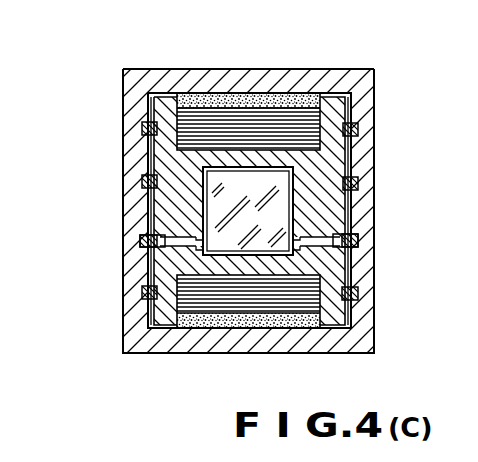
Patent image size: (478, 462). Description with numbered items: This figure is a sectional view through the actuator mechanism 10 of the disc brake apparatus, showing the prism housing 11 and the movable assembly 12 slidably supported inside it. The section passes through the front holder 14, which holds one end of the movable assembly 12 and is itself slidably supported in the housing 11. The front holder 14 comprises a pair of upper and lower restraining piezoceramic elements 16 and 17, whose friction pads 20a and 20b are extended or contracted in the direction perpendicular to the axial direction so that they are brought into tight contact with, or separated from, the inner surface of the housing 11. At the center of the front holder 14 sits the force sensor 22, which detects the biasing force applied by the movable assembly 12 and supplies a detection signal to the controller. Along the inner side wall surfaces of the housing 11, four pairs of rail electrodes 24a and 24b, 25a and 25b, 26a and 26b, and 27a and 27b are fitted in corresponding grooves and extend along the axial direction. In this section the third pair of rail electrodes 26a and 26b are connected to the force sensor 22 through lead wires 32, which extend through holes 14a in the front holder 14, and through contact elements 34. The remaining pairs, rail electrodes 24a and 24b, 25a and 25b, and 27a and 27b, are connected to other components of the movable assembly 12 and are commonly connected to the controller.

The actuator device 10 is at (333, 66).
The prism housing 11 is at (364, 86).
The movable assembly 12 is at (333, 334).
The front holder 14 is at (332, 219).
The hole 14a is at (166, 257).
The upper restraining piezoceramic element 16 is at (266, 118).
The lower restraining piezoceramic element 17 is at (203, 322).
The friction pad 20a is at (218, 102).
The friction pad 20b is at (262, 325).
The force sensor 22 is at (218, 212).
The rail electrode 24a is at (142, 128).
The rail electrode 24b is at (359, 129).
The rail electrode 25a is at (142, 182).
The rail electrode 25b is at (359, 183).
The rail electrode 26a is at (140, 244).
The rail electrode 26b is at (359, 241).
The rail electrode 27a is at (145, 300).
The rail electrode 27b is at (359, 300).
The lead wire 32 is at (150, 272).
The contact element 34 is at (166, 240).